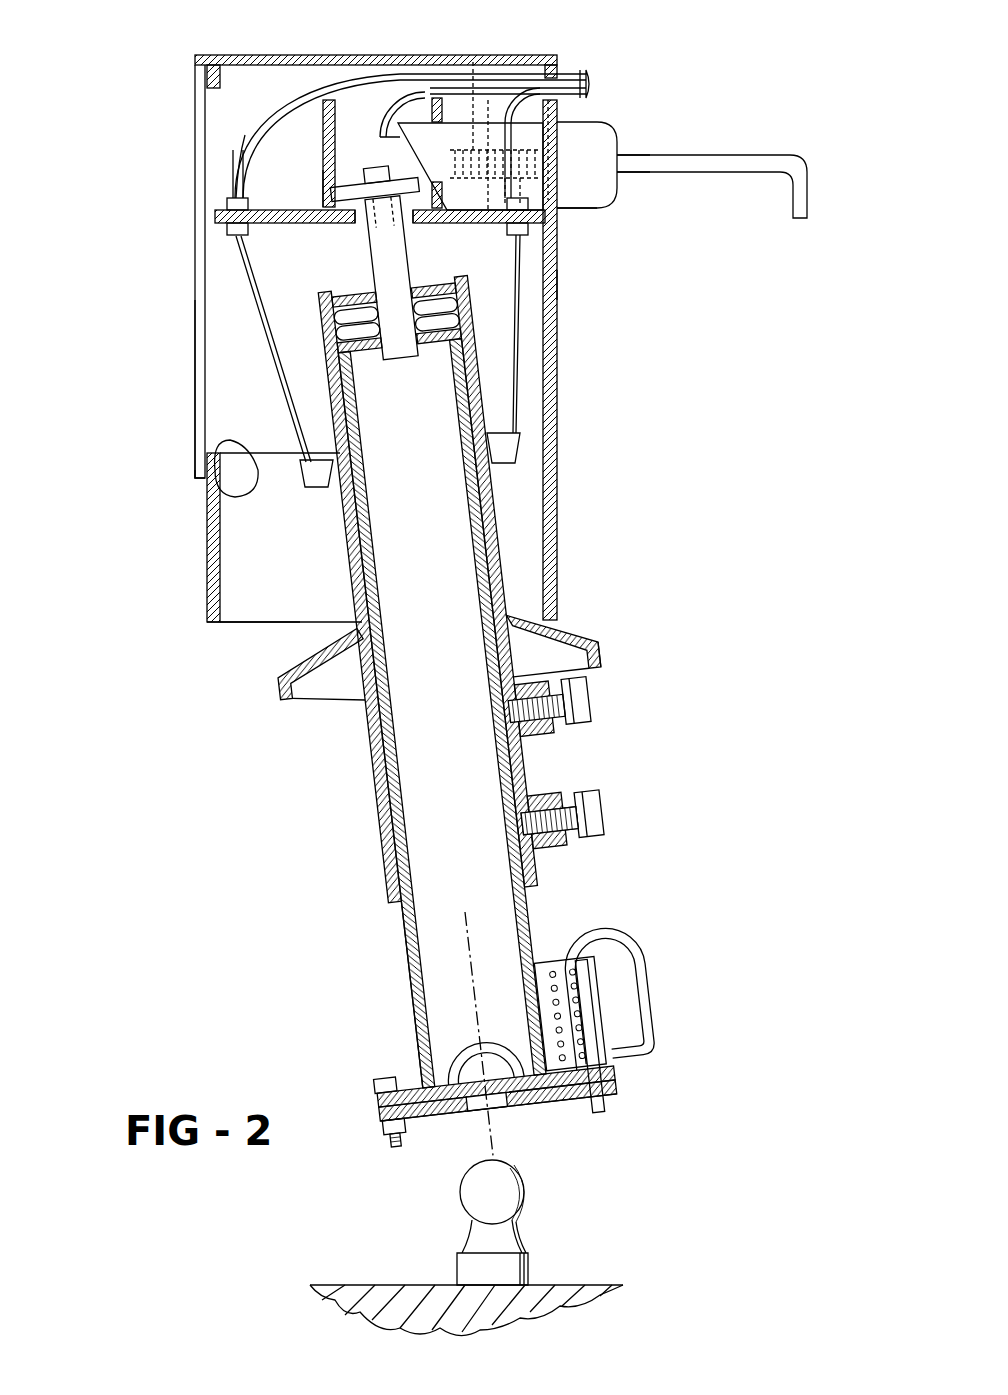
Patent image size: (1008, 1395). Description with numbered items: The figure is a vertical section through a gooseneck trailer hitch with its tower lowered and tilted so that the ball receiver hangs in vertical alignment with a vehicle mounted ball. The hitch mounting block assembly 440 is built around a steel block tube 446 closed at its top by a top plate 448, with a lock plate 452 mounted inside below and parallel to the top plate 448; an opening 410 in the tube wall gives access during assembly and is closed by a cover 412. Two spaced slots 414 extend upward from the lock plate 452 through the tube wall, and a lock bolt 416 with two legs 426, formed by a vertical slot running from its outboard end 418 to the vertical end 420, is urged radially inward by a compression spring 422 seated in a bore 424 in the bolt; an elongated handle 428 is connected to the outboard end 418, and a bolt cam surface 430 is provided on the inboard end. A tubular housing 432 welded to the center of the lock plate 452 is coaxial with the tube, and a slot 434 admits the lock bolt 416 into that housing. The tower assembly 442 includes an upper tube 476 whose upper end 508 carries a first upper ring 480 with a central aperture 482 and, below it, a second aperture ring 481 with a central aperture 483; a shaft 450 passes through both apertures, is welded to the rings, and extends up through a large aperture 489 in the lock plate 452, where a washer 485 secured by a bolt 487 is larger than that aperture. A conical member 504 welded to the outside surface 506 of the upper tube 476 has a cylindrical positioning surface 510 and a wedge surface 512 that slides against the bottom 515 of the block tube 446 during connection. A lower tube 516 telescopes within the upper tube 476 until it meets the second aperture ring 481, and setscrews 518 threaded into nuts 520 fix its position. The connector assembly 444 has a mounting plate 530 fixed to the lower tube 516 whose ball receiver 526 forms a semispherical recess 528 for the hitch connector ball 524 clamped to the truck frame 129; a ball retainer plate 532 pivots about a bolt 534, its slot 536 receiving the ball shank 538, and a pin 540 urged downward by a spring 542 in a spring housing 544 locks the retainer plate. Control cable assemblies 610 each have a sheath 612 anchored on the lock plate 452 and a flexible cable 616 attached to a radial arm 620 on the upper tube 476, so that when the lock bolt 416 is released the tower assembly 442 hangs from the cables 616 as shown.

The truck frame 129 is at (335, 1287).
The opening 410 is at (222, 487).
The cover 412 is at (203, 342).
The slots 414 is at (598, 121).
The lock bolt 416 is at (619, 186).
The outboard end 418 is at (620, 152).
The vertical end 420 is at (490, 227).
The compression spring 422 is at (545, 190).
The bore 424 is at (470, 150).
The legs 426 is at (605, 200).
The elongated handle 428 is at (766, 155).
The bolt cam surface 430 is at (380, 132).
The tubular housing 432 is at (323, 166).
The slot 434 is at (447, 207).
The hitch mounting block assembly 440 is at (176, 548).
The tower assembly 442 is at (352, 806).
The connector assembly 444 is at (356, 1158).
The block tube 446 is at (558, 290).
The top plate 448 is at (243, 56).
The shaft 450 is at (367, 262).
The lock plate 452 is at (300, 217).
The upper tube 476 is at (384, 852).
The first upper ring 480 is at (332, 290).
The second aperture ring 481 is at (345, 335).
The central aperture 482 is at (348, 312).
The central aperture 483 is at (342, 352).
The washer 485 is at (326, 178).
The bolt 487 is at (258, 112).
The large aperture 489 is at (372, 224).
The conical member 504 is at (318, 703).
The outside surface 506 is at (558, 512).
The upper end 508 is at (366, 297).
The cylindrical positioning surface 510 is at (600, 648).
The wedge surface 512 is at (578, 630).
The bottom 515 is at (262, 621).
The lower tube 516 is at (404, 946).
The setscrews 518 is at (603, 815).
The nuts 520 is at (556, 842).
The hitch connector ball 524 is at (526, 1196).
The ball receiver 526 is at (450, 1030).
The semispherical recess 528 is at (424, 1140).
The mounting plate 530 is at (612, 1070).
The ball retainer plate 532 is at (617, 1092).
The bolt 534 is at (397, 1085).
The slot 536 is at (478, 1112).
The ball shank 538 is at (522, 1246).
The pin 540 is at (598, 1112).
The spring 542 is at (624, 942).
The spring housing 544 is at (600, 988).
The control cable assemblies 610 is at (578, 70).
The sheath 612 is at (247, 142).
The flexible cable 616 is at (282, 400).
The radial arms 620 is at (524, 445).